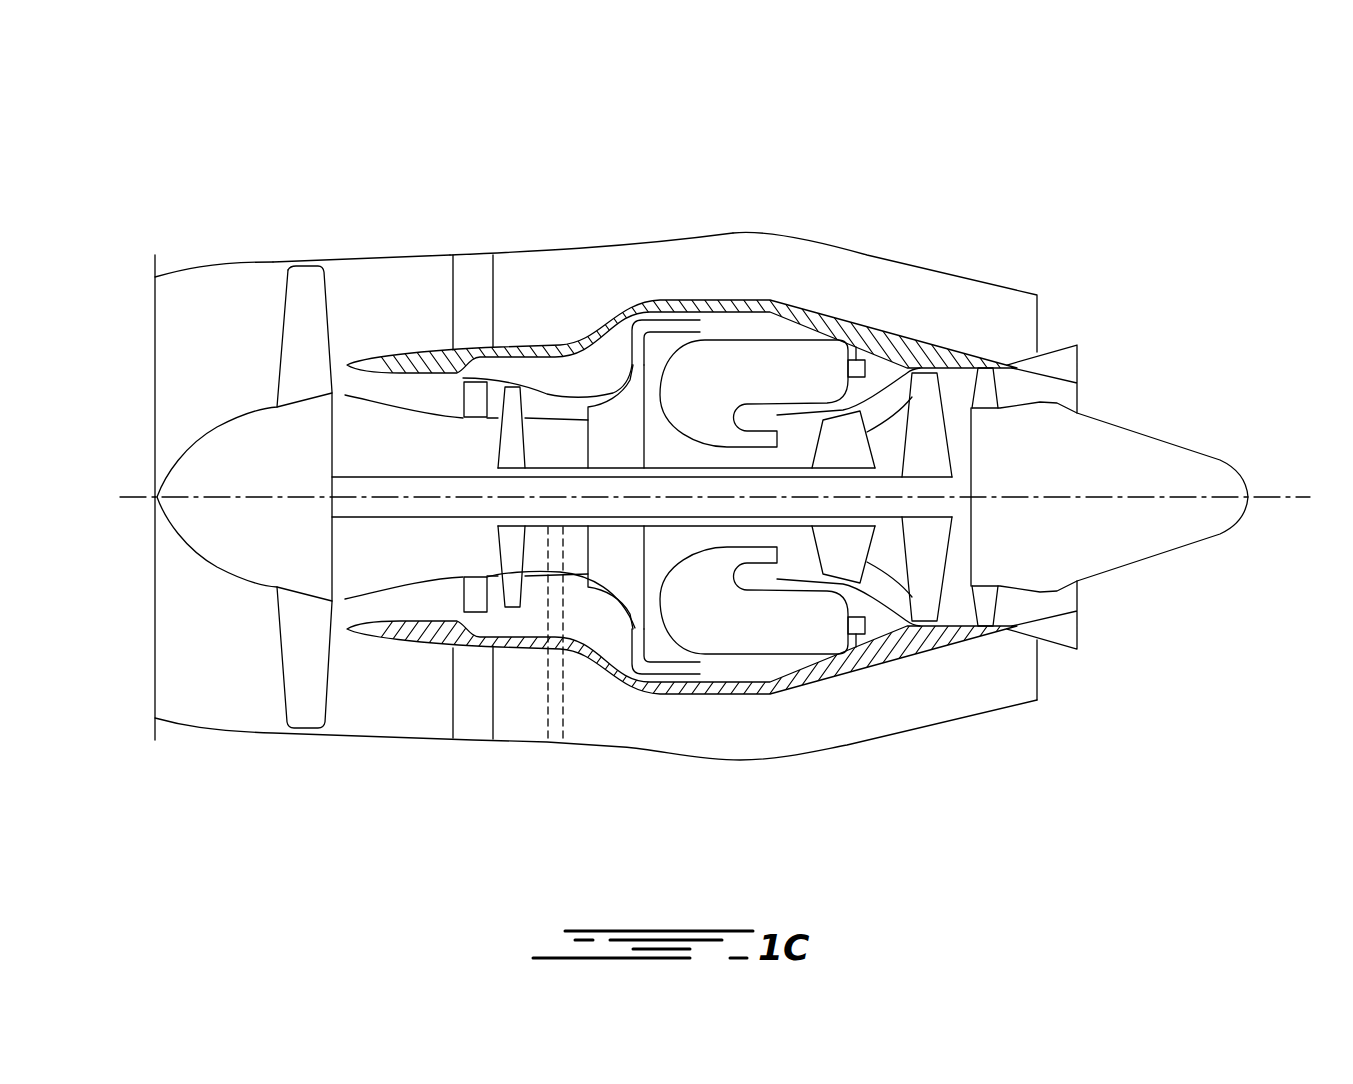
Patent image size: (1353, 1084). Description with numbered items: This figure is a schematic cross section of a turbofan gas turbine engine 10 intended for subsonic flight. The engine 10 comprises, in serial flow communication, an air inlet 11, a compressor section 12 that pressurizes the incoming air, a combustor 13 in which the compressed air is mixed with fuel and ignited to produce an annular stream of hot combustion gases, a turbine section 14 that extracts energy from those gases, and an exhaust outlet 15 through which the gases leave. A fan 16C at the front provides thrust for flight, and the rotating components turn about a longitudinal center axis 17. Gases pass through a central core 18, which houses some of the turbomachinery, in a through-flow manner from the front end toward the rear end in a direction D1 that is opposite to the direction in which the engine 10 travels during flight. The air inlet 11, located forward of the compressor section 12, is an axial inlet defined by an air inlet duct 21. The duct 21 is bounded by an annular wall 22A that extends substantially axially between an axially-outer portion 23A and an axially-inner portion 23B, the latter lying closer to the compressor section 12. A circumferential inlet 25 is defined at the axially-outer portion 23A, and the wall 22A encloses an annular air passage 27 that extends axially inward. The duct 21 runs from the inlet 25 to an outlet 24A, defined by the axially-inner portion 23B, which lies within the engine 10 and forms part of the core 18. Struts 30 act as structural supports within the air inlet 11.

The gas turbine engine 10 is at (907, 186).
The air inlet 11 is at (168, 335).
The compressor section 12 is at (500, 667).
The combustor 13 is at (757, 365).
The turbine section 14 is at (883, 560).
The exhaust outlet 15 is at (1089, 372).
The fan 16C is at (300, 647).
The longitudinal center axis 17 is at (1285, 497).
The central core 18 is at (721, 664).
The air inlet duct 21 is at (205, 266).
The annular wall 22A is at (245, 262).
The axially-outer portion 23A is at (145, 265).
The axially-inner portion 23B is at (540, 250).
The outlet 24A is at (556, 296).
The inlet 25 is at (183, 400).
The annular air passage 27 is at (240, 375).
The struts 30 is at (465, 264).
The direction of gas flow D1 is at (1090, 786).